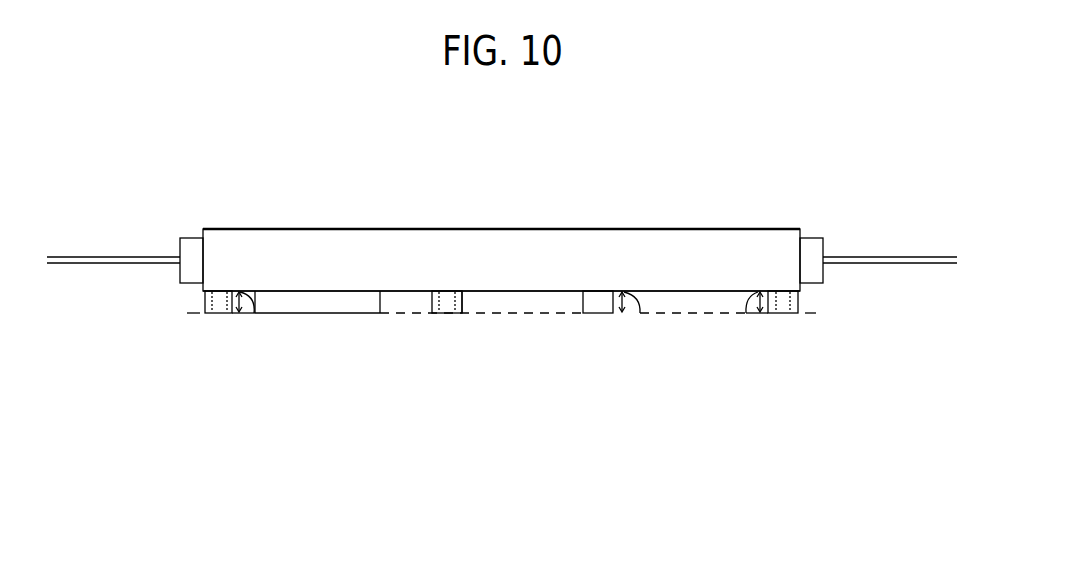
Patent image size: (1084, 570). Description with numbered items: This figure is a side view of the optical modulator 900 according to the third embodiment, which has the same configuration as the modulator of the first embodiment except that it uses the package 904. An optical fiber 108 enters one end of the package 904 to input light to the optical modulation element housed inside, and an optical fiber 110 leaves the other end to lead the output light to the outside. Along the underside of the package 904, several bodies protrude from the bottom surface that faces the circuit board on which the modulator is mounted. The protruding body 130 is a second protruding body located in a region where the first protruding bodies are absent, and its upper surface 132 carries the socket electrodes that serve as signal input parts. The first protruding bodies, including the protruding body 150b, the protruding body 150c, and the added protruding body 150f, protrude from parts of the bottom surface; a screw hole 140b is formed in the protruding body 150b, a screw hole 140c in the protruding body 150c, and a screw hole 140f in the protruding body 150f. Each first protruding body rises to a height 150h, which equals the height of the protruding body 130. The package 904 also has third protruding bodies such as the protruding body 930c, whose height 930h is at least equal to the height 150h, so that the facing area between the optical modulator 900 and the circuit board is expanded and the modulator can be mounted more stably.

The optical modulator 900 is at (697, 139).
The package 904 is at (501, 209).
The optical fiber 108 is at (125, 215).
The optical fiber 110 is at (878, 214).
The protruding body 130 is at (317, 337).
The upper surface 132 is at (464, 355).
The protruding body 150b is at (162, 335).
The protruding body 150c is at (852, 324).
The protruding body 150f is at (417, 370).
The height 150h is at (254, 313).
The screw hole 140b is at (210, 350).
The screw hole 140c is at (799, 351).
The screw hole 140f is at (467, 349).
The protruding body 930c is at (613, 384).
The height 930h is at (633, 313).